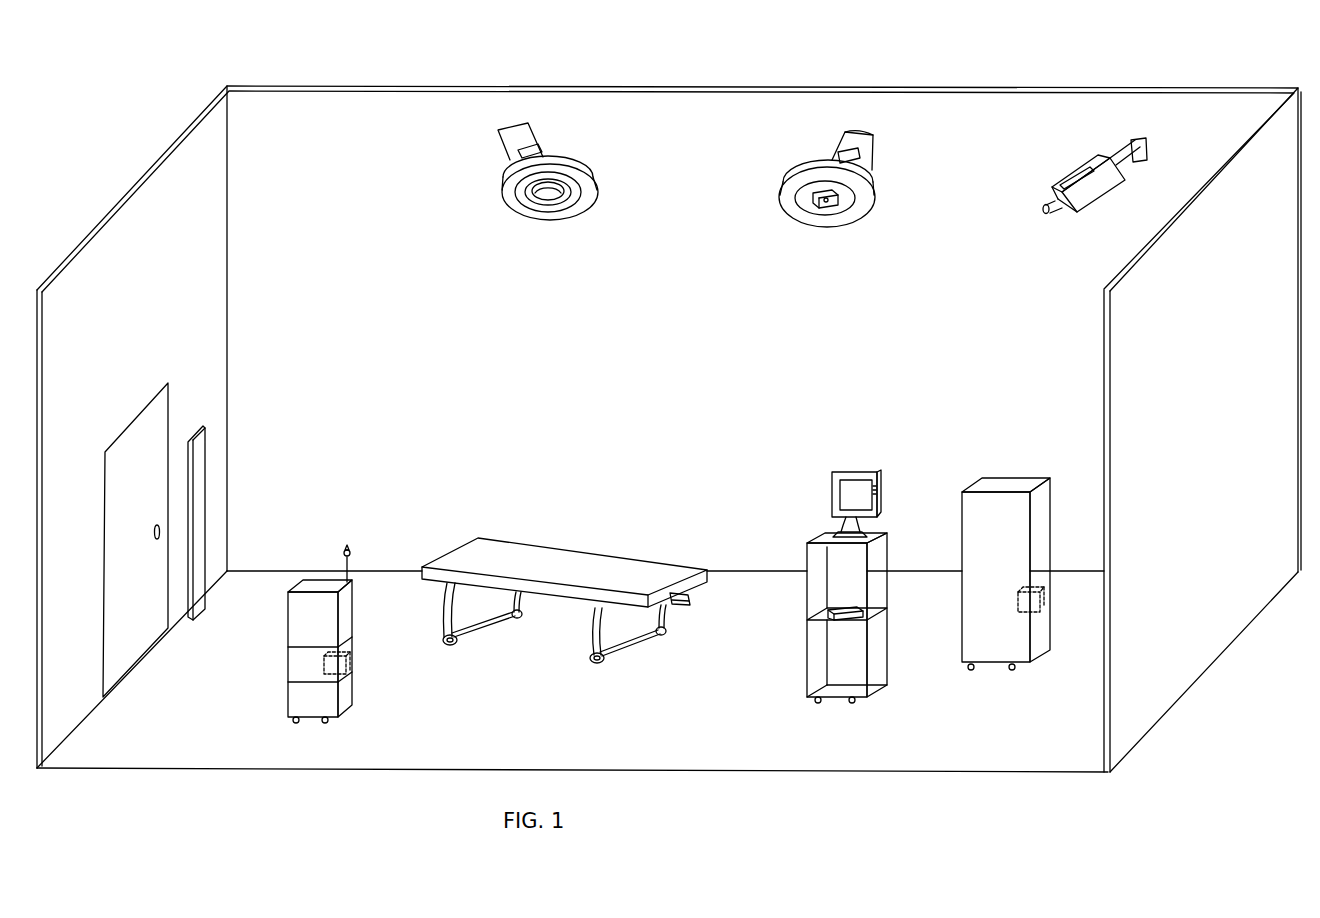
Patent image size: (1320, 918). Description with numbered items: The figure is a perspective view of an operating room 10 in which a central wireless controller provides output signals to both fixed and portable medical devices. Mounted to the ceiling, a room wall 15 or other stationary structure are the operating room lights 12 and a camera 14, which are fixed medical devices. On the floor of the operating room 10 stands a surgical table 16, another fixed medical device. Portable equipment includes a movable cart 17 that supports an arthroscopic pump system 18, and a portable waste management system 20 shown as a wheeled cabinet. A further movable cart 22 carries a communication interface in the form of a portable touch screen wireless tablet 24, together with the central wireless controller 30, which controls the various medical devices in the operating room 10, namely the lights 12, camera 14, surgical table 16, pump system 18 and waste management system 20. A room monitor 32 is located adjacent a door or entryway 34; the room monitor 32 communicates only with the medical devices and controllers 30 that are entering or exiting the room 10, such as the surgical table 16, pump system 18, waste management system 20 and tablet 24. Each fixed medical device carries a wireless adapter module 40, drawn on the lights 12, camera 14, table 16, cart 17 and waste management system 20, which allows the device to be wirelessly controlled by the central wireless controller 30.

The operating room 10 is at (272, 169).
The operating room lights 12 is at (548, 198).
The camera 14 is at (1088, 190).
The room wall 15 is at (378, 100).
The surgical table 16 is at (565, 568).
The movable cart 17 is at (298, 651).
The arthroscopic pump system 18 is at (293, 663).
The portable waste management system 20 is at (1008, 485).
The further movable cart 22 is at (822, 565).
The portable touch screen wireless tablet 24 is at (845, 498).
The central wireless controller 30 is at (867, 627).
The room monitor 32 is at (200, 533).
The door or entryway 34 is at (118, 635).
The wireless adapter module 40 is at (540, 144).